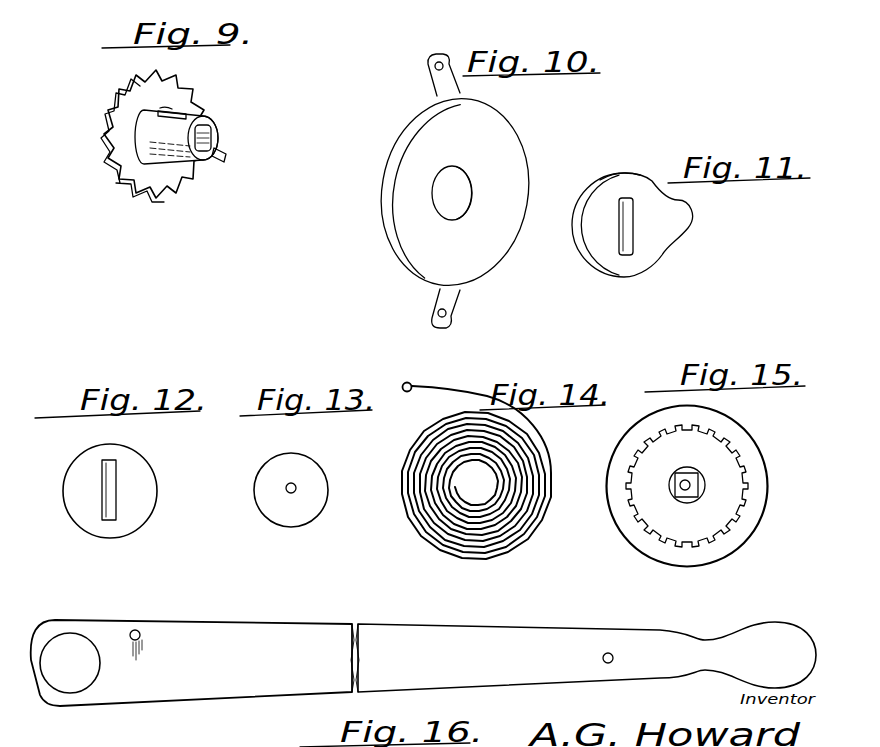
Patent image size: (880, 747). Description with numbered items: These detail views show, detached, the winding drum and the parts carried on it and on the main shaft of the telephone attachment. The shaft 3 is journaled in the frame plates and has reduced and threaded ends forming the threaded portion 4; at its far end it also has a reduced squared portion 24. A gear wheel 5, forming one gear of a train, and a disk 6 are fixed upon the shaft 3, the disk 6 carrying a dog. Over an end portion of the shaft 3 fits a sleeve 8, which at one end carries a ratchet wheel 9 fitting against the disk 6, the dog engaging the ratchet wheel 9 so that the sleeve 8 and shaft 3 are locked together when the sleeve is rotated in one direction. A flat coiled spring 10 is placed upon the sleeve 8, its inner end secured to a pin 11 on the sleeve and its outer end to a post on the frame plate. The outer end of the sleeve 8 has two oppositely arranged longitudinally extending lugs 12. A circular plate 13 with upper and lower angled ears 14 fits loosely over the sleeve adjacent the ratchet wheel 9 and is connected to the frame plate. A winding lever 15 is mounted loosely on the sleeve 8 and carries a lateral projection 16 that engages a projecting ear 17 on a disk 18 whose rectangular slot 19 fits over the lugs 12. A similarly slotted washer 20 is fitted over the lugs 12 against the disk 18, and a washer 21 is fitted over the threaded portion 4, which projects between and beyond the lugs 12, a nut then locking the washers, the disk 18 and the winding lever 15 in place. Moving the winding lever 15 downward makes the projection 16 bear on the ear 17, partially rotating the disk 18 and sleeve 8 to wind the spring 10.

In FIG. 15, the shaft 3 is at (705, 480).
In FIG. 15, the reduced threaded portion 4 is at (673, 492).
In FIG. 15, the gear wheel 5 is at (712, 497).
In FIG. 15, the disk 6 is at (722, 543).
In FIG. 9, the sleeve 8 is at (193, 155).
In FIG. 9, the ratchet wheel 9 is at (120, 106).
In FIG. 14, the spring 10 is at (422, 449).
In FIG. 9, the pin 11 is at (163, 113).
In FIG. 9, the lugs 12 is at (222, 158).
In FIG. 10, the circular plate 13 is at (455, 192).
In FIG. 10, the angled ears 14 is at (428, 66).
In FIG. 16, the winding lever 15 is at (423, 663).
In FIG. 16, the lateral projection 16 is at (140, 631).
In FIG. 11, the projecting ear 17 is at (683, 214).
In FIG. 11, the disk 18 is at (616, 175).
In FIG. 11, the rectangular slot 19 is at (622, 248).
In FIG. 12, the washer 20 is at (141, 482).
In FIG. 13, the washer 21 is at (279, 506).
In FIG. 15, the reduced squared portion 24 is at (672, 475).